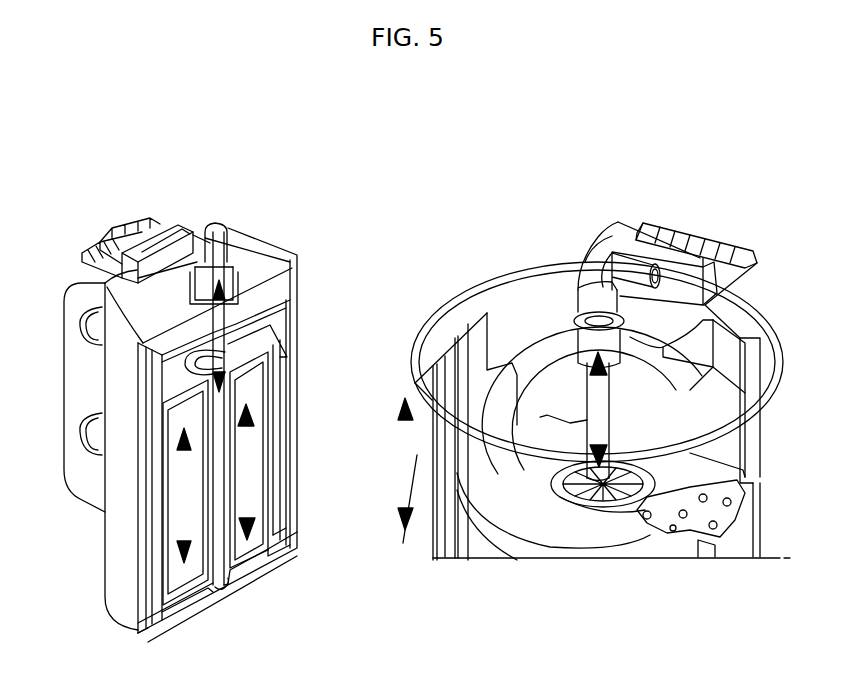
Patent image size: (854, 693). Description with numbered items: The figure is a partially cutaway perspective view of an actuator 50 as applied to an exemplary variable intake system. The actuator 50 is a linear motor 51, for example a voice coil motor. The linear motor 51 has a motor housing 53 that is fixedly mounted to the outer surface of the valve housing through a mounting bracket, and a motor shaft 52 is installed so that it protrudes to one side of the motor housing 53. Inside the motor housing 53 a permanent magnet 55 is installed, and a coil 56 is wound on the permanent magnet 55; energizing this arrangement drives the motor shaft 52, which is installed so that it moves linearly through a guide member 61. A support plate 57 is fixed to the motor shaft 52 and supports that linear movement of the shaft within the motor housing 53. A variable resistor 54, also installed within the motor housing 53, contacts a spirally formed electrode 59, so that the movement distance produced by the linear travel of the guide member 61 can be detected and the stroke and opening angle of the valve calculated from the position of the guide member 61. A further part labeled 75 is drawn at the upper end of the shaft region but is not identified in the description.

The actuator 50 is at (150, 151).
The linear motor 51 is at (290, 228).
The motor shaft 52 is at (240, 312).
The motor housing 53 is at (290, 452).
The variable resistor 54 is at (437, 457).
The permanent magnet 55 is at (185, 596).
The coil 56 is at (277, 503).
The support plate 57 is at (230, 335).
The electrode 59 is at (537, 500).
The guide member 61 is at (219, 592).
The drive shaft 75 is at (215, 228).